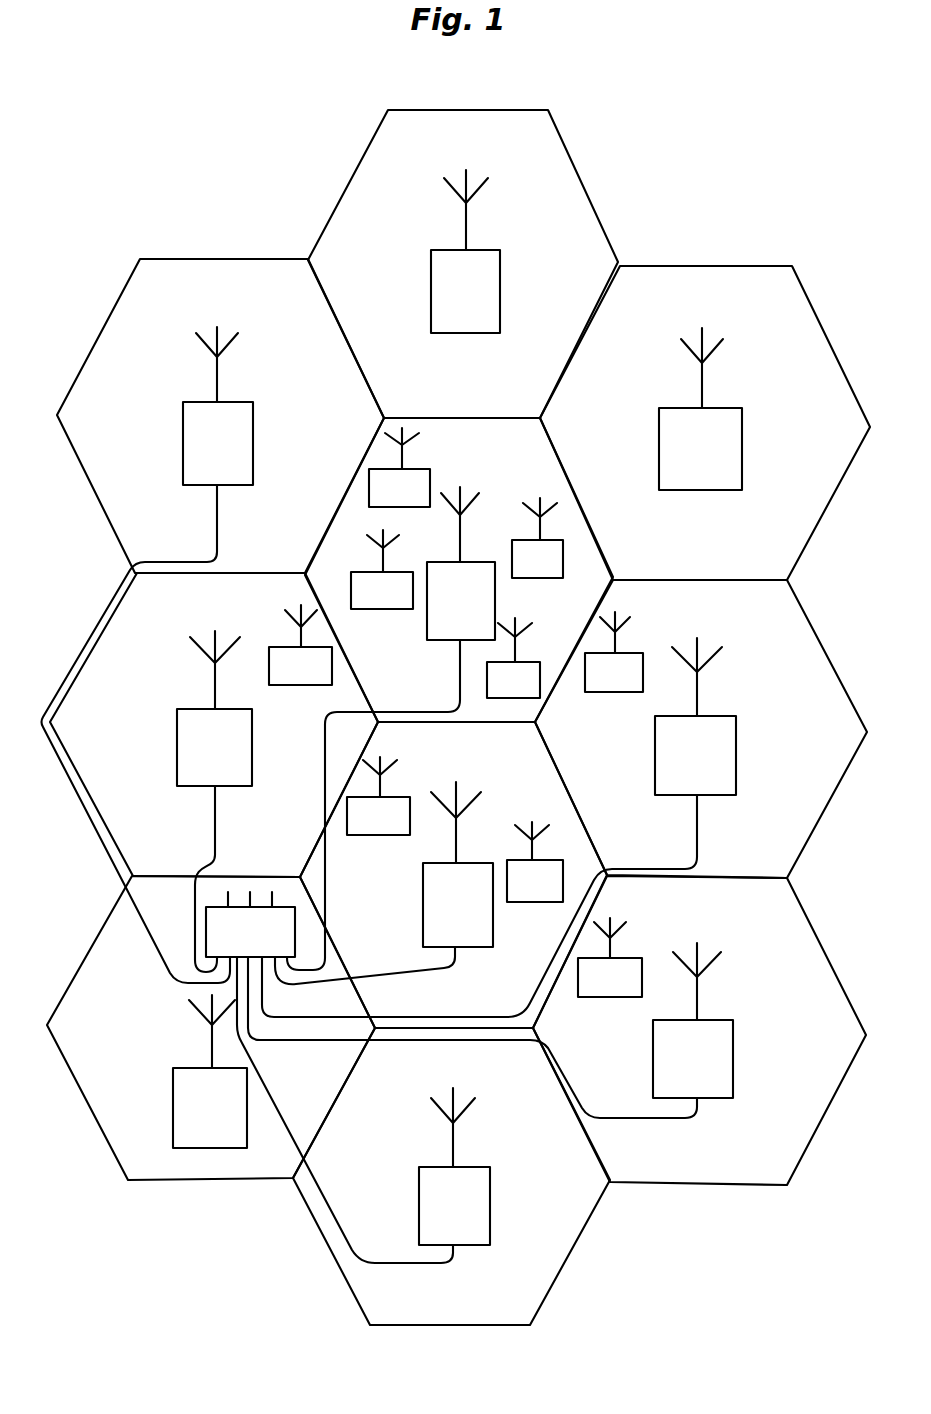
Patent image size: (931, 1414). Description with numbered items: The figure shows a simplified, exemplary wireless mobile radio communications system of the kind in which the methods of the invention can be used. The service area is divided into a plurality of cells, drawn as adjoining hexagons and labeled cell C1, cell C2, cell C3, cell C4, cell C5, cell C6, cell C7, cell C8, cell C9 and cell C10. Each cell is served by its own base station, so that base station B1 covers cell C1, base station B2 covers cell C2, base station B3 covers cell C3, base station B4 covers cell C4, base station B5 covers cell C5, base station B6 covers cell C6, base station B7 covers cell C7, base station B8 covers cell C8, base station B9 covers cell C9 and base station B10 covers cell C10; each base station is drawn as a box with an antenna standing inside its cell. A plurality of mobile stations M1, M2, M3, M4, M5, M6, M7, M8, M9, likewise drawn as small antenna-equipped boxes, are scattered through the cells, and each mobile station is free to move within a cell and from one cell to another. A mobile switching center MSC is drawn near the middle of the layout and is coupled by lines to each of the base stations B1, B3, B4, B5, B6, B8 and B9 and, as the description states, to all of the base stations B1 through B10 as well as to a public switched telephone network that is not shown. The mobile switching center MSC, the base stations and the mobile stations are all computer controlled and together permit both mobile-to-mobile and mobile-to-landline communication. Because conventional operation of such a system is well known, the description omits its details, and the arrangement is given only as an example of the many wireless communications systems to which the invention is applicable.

The cell C1 is at (415, 700).
The cell C2 is at (645, 558).
The cell C3 is at (640, 856).
The cell C4 is at (407, 1005).
The cell C5 is at (164, 851).
The cell C6 is at (167, 550).
The cell C7 is at (422, 405).
The cell C8 is at (639, 1163).
The cell C9 is at (404, 1303).
The cell C10 is at (176, 1171).
The base station B1 is at (461, 563).
The base station B2 is at (700, 409).
The base station B3 is at (695, 716).
The base station B4 is at (458, 864).
The base station B5 is at (214, 708).
The base station B6 is at (218, 406).
The base station B7 is at (465, 251).
The base station B8 is at (693, 1020).
The base station B9 is at (454, 1166).
The base station B10 is at (210, 1071).
The mobile station M1 is at (610, 957).
The mobile station M2 is at (300, 645).
The mobile station M3 is at (382, 569).
The mobile station M4 is at (537, 538).
The mobile station M5 is at (614, 652).
The mobile station M6 is at (399, 467).
The mobile station M7 is at (513, 658).
The mobile station M8 is at (535, 862).
The mobile station M9 is at (378, 796).
The mobile switching center MSC is at (250, 924).